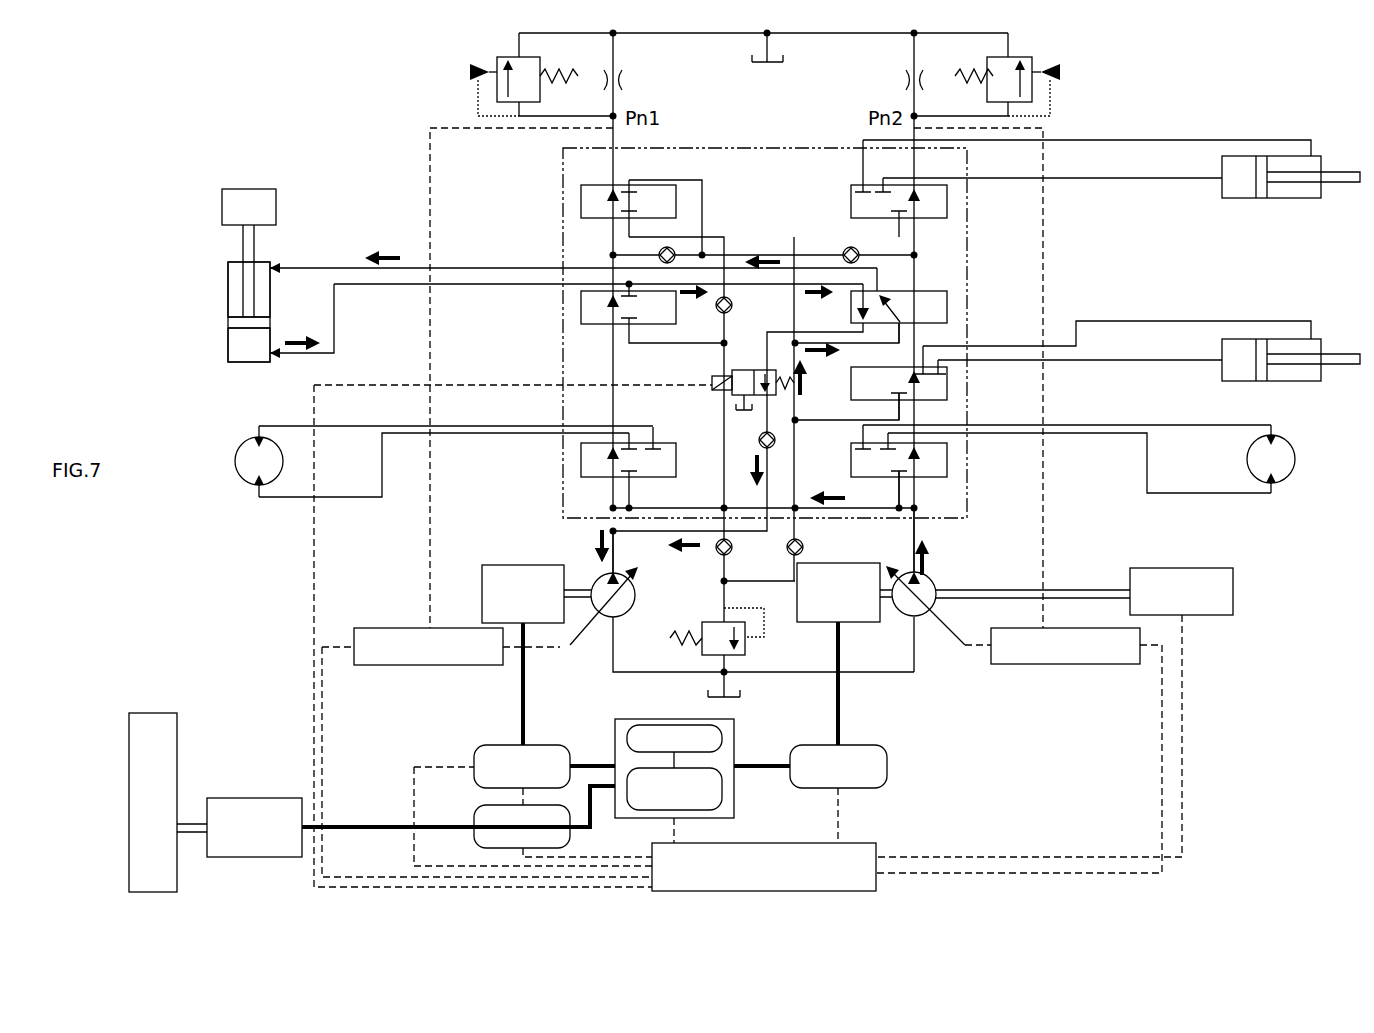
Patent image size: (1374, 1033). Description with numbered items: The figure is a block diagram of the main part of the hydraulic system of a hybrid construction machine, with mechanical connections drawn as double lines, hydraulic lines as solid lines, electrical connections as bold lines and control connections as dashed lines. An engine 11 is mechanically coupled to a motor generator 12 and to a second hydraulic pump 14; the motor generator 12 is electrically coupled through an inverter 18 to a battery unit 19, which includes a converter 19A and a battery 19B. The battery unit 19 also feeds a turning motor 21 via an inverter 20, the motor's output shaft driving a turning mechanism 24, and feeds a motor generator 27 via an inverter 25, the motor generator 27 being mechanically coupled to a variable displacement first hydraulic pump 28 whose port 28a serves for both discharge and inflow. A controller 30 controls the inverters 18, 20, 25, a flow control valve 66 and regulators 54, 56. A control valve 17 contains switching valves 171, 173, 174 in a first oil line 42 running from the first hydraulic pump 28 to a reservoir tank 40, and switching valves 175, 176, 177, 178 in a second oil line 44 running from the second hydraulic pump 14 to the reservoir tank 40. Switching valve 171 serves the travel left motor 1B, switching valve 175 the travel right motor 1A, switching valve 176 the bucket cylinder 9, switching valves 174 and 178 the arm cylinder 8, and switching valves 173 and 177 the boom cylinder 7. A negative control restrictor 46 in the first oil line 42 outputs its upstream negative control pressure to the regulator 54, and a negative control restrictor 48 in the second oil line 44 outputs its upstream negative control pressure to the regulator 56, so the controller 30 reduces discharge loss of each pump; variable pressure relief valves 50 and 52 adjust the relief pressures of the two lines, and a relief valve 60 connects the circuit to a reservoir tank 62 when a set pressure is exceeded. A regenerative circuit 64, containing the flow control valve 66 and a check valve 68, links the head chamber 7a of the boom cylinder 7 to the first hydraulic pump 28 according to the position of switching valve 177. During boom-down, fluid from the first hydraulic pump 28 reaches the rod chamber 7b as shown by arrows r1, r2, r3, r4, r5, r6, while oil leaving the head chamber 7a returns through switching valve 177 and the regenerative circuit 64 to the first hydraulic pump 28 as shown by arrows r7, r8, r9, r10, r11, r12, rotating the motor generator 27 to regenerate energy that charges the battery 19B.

The travel right motor 1A is at (1290, 475).
The travel left motor 1B is at (235, 461).
The boom cylinder 7 is at (518, 286).
The head chamber 7a is at (228, 343).
The rod chamber 7b is at (228, 290).
The arm cylinder 8 is at (1250, 198).
The bucket cylinder 9 is at (1250, 381).
The engine 11 is at (1190, 568).
The motor generator 12 is at (840, 563).
The second hydraulic pump 14 is at (936, 585).
The control valve 17 is at (735, 148).
The inverter 18 is at (860, 745).
The battery unit 19 is at (679, 767).
The converter 19A is at (722, 738).
The battery 19B is at (722, 792).
The inverter 20 is at (474, 810).
The turning motor 21 is at (250, 798).
The turning mechanism 24 is at (145, 713).
The inverter 25 is at (474, 752).
The motor generator 27 is at (482, 565).
The first hydraulic pump 28 is at (634, 604).
The port 28a is at (598, 540).
The controller 30 is at (850, 843).
The reservoir tank 40 is at (786, 58).
The first oil line 42 is at (618, 560).
The second oil line 44 is at (918, 545).
The negative control restrictor 46 is at (624, 80).
The negative control restrictor 48 is at (903, 80).
The variable pressure relief valve 50 is at (497, 58).
The variable pressure relief valve 52 is at (1032, 52).
The regulator 54 is at (460, 665).
The regulator 56 is at (1040, 664).
The relief valve 60 is at (745, 645).
The reservoir tank 62 is at (740, 692).
The regenerative circuit 64 is at (760, 370).
The flow control valve 66 is at (722, 390).
The check valve 68 is at (760, 436).
The switching valve 171 is at (676, 462).
The switching valve 173 is at (600, 324).
The switching valve 174 is at (676, 203).
The switching valve 175 is at (860, 443).
The switching valve 176 is at (914, 400).
The switching valve 177 is at (930, 291).
The switching valve 178 is at (851, 205).
The arrow r1 is at (930, 560).
The arrow r2 is at (820, 490).
The arrow r3 is at (806, 390).
The arrow r4 is at (818, 356).
The arrow r5 is at (760, 255).
The arrow r6 is at (385, 255).
The arrow r7 is at (296, 338).
The arrow r8 is at (685, 298).
The arrow r9 is at (812, 298).
The arrow r10 is at (750, 478).
The arrow r11 is at (690, 550).
The arrow r12 is at (596, 535).